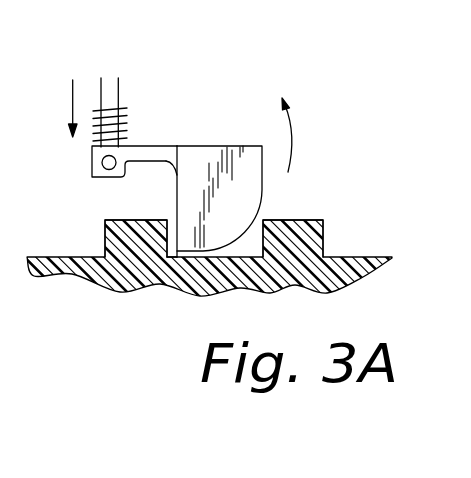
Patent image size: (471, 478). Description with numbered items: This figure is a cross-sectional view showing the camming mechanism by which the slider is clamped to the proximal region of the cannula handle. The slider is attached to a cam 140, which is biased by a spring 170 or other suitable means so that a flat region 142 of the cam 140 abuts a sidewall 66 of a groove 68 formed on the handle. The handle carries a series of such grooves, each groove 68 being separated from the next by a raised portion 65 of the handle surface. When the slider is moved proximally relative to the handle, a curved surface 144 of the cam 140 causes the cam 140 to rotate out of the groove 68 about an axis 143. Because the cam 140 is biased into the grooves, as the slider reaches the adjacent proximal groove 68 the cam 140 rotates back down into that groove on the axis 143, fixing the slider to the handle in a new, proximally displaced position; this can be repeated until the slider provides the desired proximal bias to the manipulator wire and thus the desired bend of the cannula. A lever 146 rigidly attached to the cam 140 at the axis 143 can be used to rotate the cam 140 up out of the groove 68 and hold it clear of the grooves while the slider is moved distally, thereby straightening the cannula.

The cam 140 is at (225, 146).
The flat region 142 is at (177, 176).
The axis 143 is at (92, 177).
The curved surface 144 is at (263, 192).
The lever 146 is at (101, 87).
The spring 170 is at (122, 110).
The rib 65 is at (322, 219).
The sidewall 66 is at (169, 241).
The groove 68 is at (355, 257).